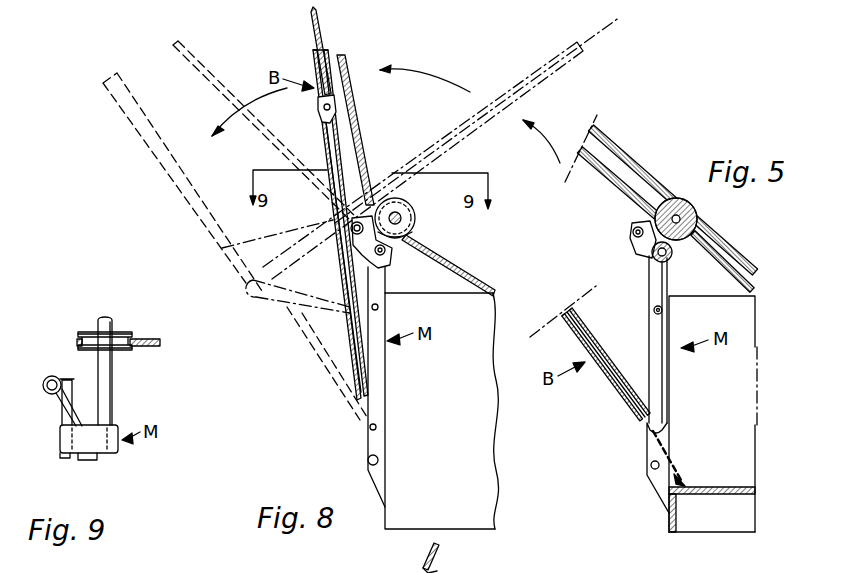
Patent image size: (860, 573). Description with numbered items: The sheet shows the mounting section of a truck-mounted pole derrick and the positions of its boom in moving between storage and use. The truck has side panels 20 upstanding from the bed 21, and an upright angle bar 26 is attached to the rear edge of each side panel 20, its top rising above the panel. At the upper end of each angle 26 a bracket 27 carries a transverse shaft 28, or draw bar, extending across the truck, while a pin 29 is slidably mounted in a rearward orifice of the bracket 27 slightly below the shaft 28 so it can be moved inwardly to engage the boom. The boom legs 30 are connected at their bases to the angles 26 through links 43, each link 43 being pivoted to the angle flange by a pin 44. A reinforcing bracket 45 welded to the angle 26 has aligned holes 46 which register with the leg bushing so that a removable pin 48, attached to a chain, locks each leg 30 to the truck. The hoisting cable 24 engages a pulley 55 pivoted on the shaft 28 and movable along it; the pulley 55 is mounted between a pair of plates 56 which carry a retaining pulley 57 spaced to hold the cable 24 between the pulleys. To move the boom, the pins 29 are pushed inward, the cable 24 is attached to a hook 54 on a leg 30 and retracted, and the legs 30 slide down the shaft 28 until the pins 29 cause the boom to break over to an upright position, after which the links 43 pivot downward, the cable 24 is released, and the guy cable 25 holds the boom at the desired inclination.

In FIG. 8, the side panel 20 is at (442, 411).
In FIG. 5, the side panel 20 is at (713, 414).
In FIG. 5, the bed 21 is at (738, 467).
In FIG. 8, the hoisting cable 24 is at (320, 29).
In FIG. 9, the hoisting cable 24 is at (149, 347).
In FIG. 5, the hoisting cable 24 is at (616, 194).
In FIG. 5, the guy cable 25 is at (636, 177).
In FIG. 8, the upright angle bar 26 is at (381, 386).
In FIG. 9, the upright angle bar 26 is at (97, 458).
In FIG. 5, the upright angle bar 26 is at (652, 290).
In FIG. 8, the bracket 27 is at (360, 246).
In FIG. 9, the bracket 27 is at (89, 416).
In FIG. 5, the bracket 27 is at (634, 247).
In FIG. 8, the transverse shaft 28 is at (401, 216).
In FIG. 9, the transverse shaft 28 is at (113, 383).
In FIG. 5, the transverse shaft 28 is at (680, 221).
In FIG. 8, the pin 29 is at (351, 225).
In FIG. 9, the pin 29 is at (66, 402).
In FIG. 5, the pin 29 is at (633, 231).
In FIG. 8, the leg 30 is at (331, 144).
In FIG. 9, the leg 30 is at (43, 388).
In FIG. 5, the leg 30 is at (616, 389).
In FIG. 8, the link 43 is at (297, 302).
In FIG. 5, the link 43 is at (662, 388).
In FIG. 8, the pin 44 is at (379, 308).
In FIG. 5, the pin 44 is at (663, 310).
In FIG. 5, the reinforcing bracket 45 is at (650, 452).
In FIG. 8, the aligned holes 46 is at (377, 427).
In FIG. 5, the removable pin 48 is at (657, 431).
In FIG. 8, the hook 54 is at (321, 113).
In FIG. 8, the pulley 55 is at (412, 220).
In FIG. 9, the pulley 55 is at (122, 338).
In FIG. 5, the pulley 55 is at (681, 207).
In FIG. 8, the plates 56 is at (412, 232).
In FIG. 9, the plates 56 is at (93, 330).
In FIG. 8, the retaining pulley 57 is at (389, 255).
In FIG. 5, the retaining pulley 57 is at (671, 260).